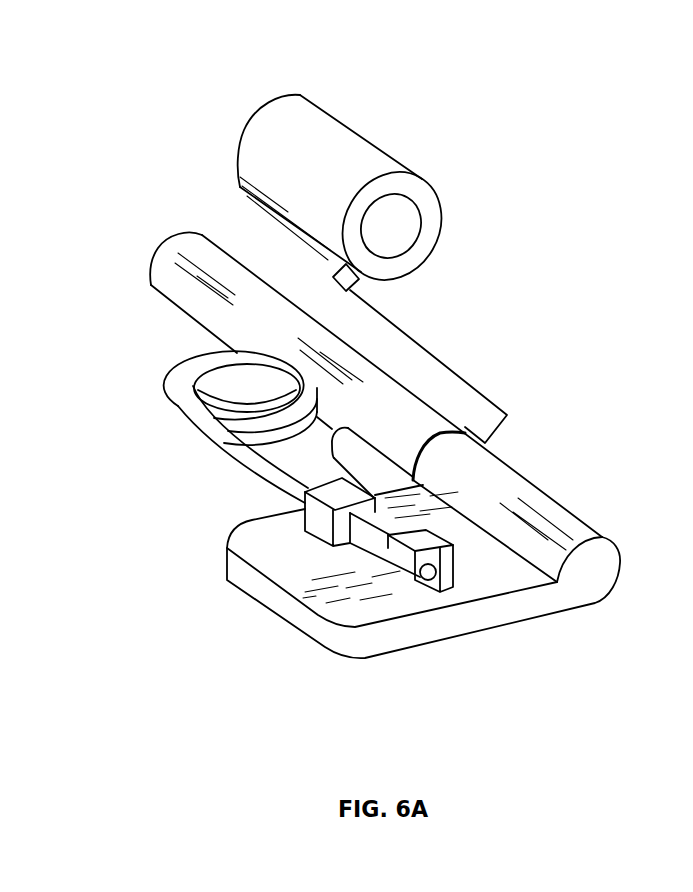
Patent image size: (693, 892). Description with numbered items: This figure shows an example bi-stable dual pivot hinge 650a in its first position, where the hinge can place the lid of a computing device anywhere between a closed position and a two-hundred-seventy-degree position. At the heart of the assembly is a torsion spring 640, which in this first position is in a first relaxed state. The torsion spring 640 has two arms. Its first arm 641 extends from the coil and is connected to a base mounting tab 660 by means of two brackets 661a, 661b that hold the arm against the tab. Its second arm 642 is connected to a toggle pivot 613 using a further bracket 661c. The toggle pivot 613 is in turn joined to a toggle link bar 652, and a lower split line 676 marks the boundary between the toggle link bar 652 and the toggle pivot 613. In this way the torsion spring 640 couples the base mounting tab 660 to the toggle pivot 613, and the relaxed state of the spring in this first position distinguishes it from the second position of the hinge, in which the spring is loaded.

The bi-stable dual pivot hinge 650a is at (185, 108).
The toggle pivot 613 is at (365, 377).
The second arm 642 is at (330, 432).
The bracket 661c is at (372, 462).
The lower split line 676 is at (433, 437).
The toggle link bar 652 is at (557, 511).
The torsion spring 640 is at (183, 368).
The first arm 641 is at (273, 460).
The bracket 661b is at (326, 520).
The bracket 661a is at (431, 552).
The base mounting tab 660 is at (386, 647).